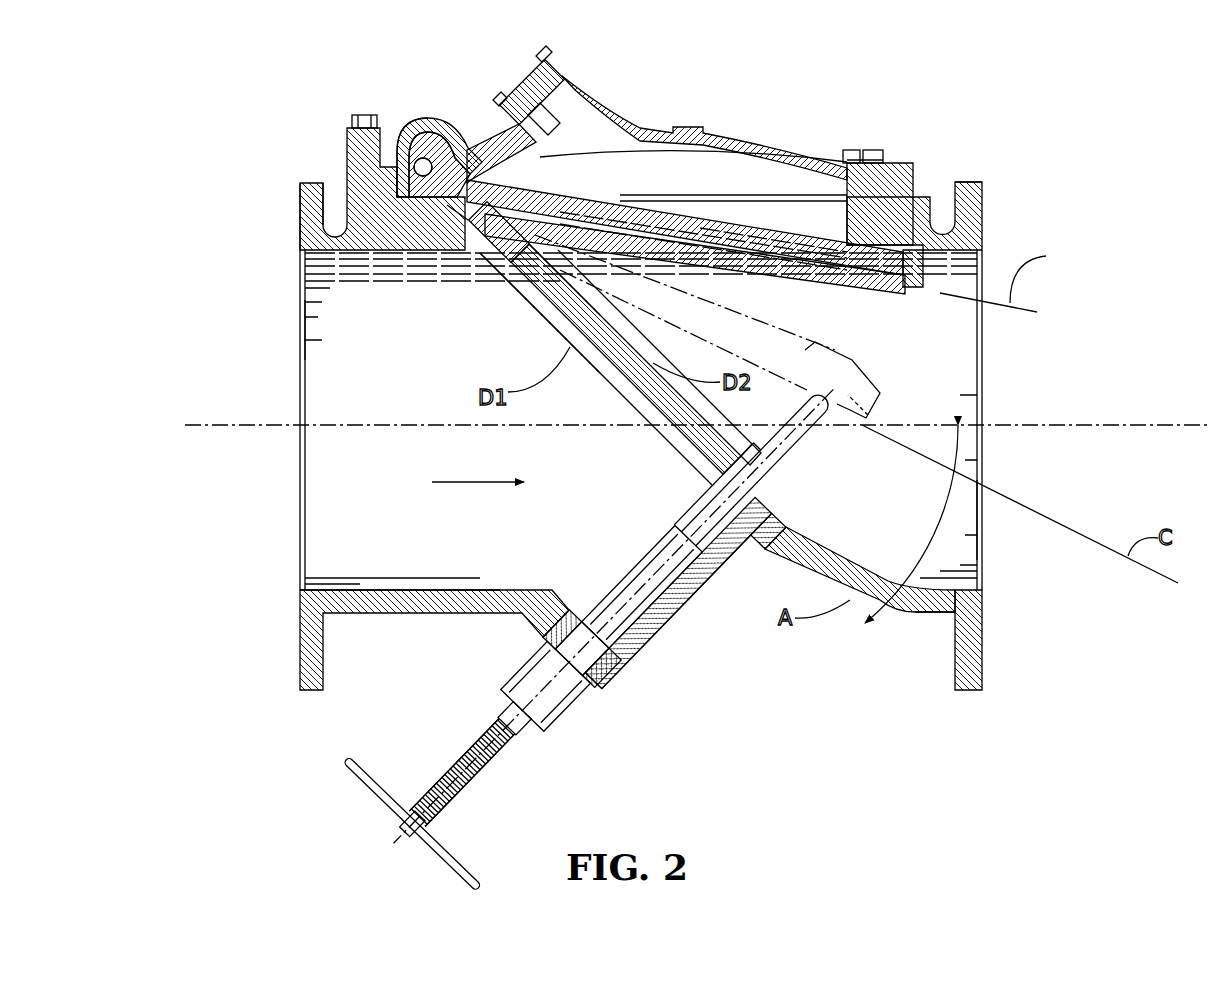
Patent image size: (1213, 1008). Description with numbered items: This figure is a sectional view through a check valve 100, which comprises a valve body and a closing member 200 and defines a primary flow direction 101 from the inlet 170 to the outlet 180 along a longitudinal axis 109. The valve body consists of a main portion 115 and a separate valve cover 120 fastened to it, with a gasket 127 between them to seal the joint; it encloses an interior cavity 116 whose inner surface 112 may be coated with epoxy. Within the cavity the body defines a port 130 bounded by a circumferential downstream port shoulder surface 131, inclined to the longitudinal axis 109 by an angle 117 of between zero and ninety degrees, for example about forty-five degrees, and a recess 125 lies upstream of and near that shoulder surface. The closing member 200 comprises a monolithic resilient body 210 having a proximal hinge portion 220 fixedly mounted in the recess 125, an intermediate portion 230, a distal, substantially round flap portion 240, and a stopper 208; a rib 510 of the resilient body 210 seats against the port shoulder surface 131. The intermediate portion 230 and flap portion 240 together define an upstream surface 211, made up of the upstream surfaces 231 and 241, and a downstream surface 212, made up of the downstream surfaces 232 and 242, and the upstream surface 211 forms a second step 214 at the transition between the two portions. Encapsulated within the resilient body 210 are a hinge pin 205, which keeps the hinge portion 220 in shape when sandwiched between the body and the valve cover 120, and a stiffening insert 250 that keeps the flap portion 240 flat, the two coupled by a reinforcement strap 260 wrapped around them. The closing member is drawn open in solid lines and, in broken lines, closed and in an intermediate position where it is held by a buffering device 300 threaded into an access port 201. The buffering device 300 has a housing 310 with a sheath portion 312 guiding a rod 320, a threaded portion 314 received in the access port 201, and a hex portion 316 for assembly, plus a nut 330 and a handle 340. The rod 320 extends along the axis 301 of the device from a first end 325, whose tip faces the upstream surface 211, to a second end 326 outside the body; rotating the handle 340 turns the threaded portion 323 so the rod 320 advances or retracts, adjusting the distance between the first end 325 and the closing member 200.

The check valve 100 is at (205, 97).
The primary flow direction 101 is at (480, 482).
The longitudinal axis 109 is at (228, 425).
The inner surface 112 is at (320, 362).
The main portion 115 is at (300, 302).
The interior cavity 116 is at (300, 342).
The angle 117 is at (940, 515).
The valve cover 120 is at (738, 135).
The recess 125 is at (418, 176).
The gasket 127 is at (895, 165).
The port 130 is at (514, 264).
The port shoulder surface 131 is at (762, 460).
The inlet 170 is at (300, 592).
The outlet 180 is at (987, 587).
The closing member 200 is at (764, 196).
The access port 201 is at (648, 648).
The hinge pin 205 is at (405, 125).
The stopper 208 is at (853, 150).
The resilient body 210 is at (423, 117).
The upstream surface 211 is at (700, 260).
The downstream surface 212 is at (690, 207).
The second step 214 is at (531, 243).
The hinge portion 220 is at (395, 124).
The intermediate portion 230 is at (470, 165).
The upstream surface 231 is at (470, 212).
The downstream surface 232 is at (506, 172).
The flap portion 240 is at (705, 213).
The upstream surface 241 is at (620, 265).
The downstream surface 242 is at (637, 150).
The stiffening insert 250 is at (760, 230).
The reinforcement strap 260 is at (447, 205).
The buffering device 300 is at (612, 592).
The axis 301 is at (727, 568).
The housing 310 is at (614, 566).
The sheath portion 312 is at (687, 608).
The threaded portion 314 is at (560, 615).
The hex portion 316 is at (557, 708).
The rod 320 is at (817, 430).
The threaded portion 323 is at (453, 757).
The first end 325 is at (823, 397).
The second end 326 is at (397, 823).
The nut 330 is at (527, 737).
The handle 340 is at (440, 852).
The rib 510 is at (913, 288).